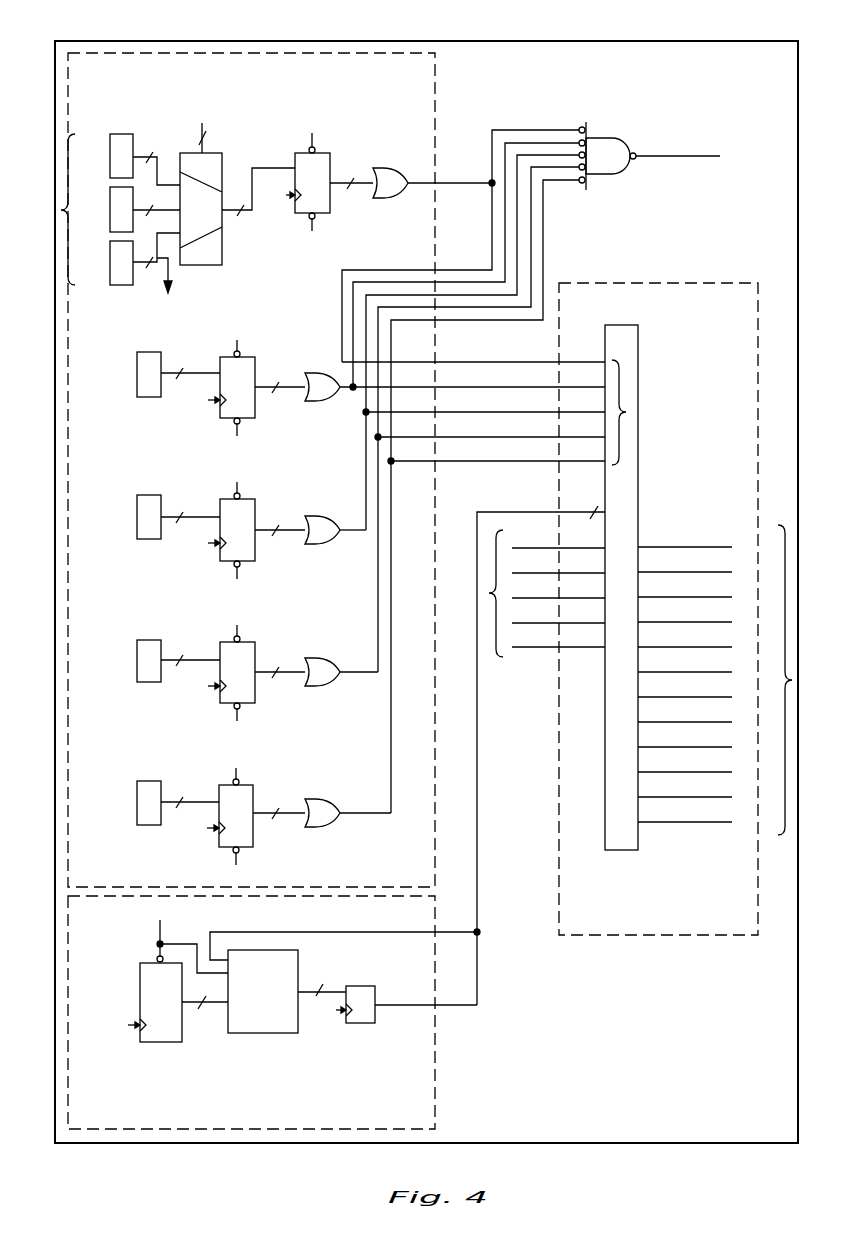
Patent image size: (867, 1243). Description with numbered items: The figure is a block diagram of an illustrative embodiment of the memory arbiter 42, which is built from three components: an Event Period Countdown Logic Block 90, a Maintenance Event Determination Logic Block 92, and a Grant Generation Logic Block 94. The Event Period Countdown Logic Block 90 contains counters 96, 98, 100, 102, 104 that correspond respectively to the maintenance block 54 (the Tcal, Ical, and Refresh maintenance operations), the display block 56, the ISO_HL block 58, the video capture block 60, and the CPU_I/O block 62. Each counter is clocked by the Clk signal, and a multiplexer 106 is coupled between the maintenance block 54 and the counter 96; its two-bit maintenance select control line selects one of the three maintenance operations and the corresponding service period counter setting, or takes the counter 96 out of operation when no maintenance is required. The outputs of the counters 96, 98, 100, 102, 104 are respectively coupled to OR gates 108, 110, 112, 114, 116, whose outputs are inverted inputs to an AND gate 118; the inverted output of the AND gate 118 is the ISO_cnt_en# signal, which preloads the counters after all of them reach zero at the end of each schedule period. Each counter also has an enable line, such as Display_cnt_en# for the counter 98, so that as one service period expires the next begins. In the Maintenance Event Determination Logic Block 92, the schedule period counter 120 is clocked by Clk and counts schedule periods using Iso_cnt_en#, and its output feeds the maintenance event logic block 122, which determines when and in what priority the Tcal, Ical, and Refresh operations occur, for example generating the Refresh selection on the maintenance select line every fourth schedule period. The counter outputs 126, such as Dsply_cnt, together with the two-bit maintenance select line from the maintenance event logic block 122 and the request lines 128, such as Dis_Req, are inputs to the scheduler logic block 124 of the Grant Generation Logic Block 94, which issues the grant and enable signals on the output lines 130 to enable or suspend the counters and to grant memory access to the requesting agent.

The memory arbiter 42 is at (685, 33).
The maintenance block 54 is at (60, 207).
The display block 56 is at (137, 352).
The ISO_HL block 58 is at (137, 497).
The video capture block 60 is at (137, 640).
The CPU_I/O block 62 is at (137, 782).
The Event Period Countdown Logic Block 90 is at (449, 93).
The Maintenance Event Determination Logic Block 92 is at (437, 1066).
The Grant Generation Logic Block 94 is at (664, 944).
The counter 96 is at (330, 204).
The counter 98 is at (255, 408).
The counter 100 is at (254, 552).
The counter 102 is at (254, 694).
The counter 104 is at (255, 788).
The multiplexer 106 is at (222, 155).
The OR gate 108 is at (392, 168).
The OR gate 110 is at (315, 373).
The OR gate 112 is at (315, 516).
The OR gate 114 is at (315, 658).
The OR gate 116 is at (315, 800).
The AND gate 118 is at (613, 137).
The schedule period counter 120 is at (140, 990).
The maintenance event logic block 122 is at (285, 950).
The scheduler logic block 124 is at (636, 504).
The outputs of the counters 126 is at (626, 413).
The request lines 128 is at (489, 593).
The output lines 130 is at (792, 678).